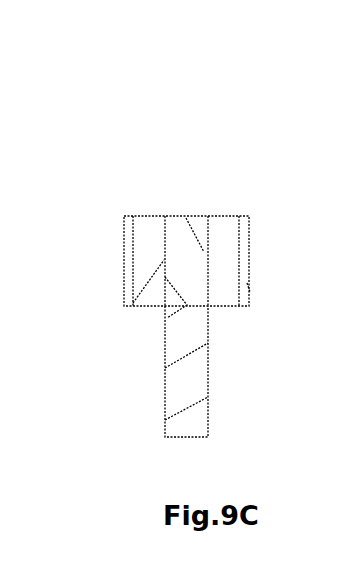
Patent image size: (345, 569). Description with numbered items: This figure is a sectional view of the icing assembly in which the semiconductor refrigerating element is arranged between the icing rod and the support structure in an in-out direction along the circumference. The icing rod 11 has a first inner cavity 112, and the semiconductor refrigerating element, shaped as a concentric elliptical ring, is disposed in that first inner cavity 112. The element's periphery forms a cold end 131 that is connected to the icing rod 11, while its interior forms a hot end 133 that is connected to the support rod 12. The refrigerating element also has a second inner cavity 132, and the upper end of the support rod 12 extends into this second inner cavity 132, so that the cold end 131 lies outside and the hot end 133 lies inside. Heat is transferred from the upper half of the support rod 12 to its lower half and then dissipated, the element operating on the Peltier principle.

The icing rod 11 is at (120, 262).
The support rod 12 is at (178, 375).
The first inner cavity 112 is at (210, 263).
The cold end 131 is at (132, 243).
The second inner cavity 132 is at (208, 216).
The hot end 133 is at (163, 243).